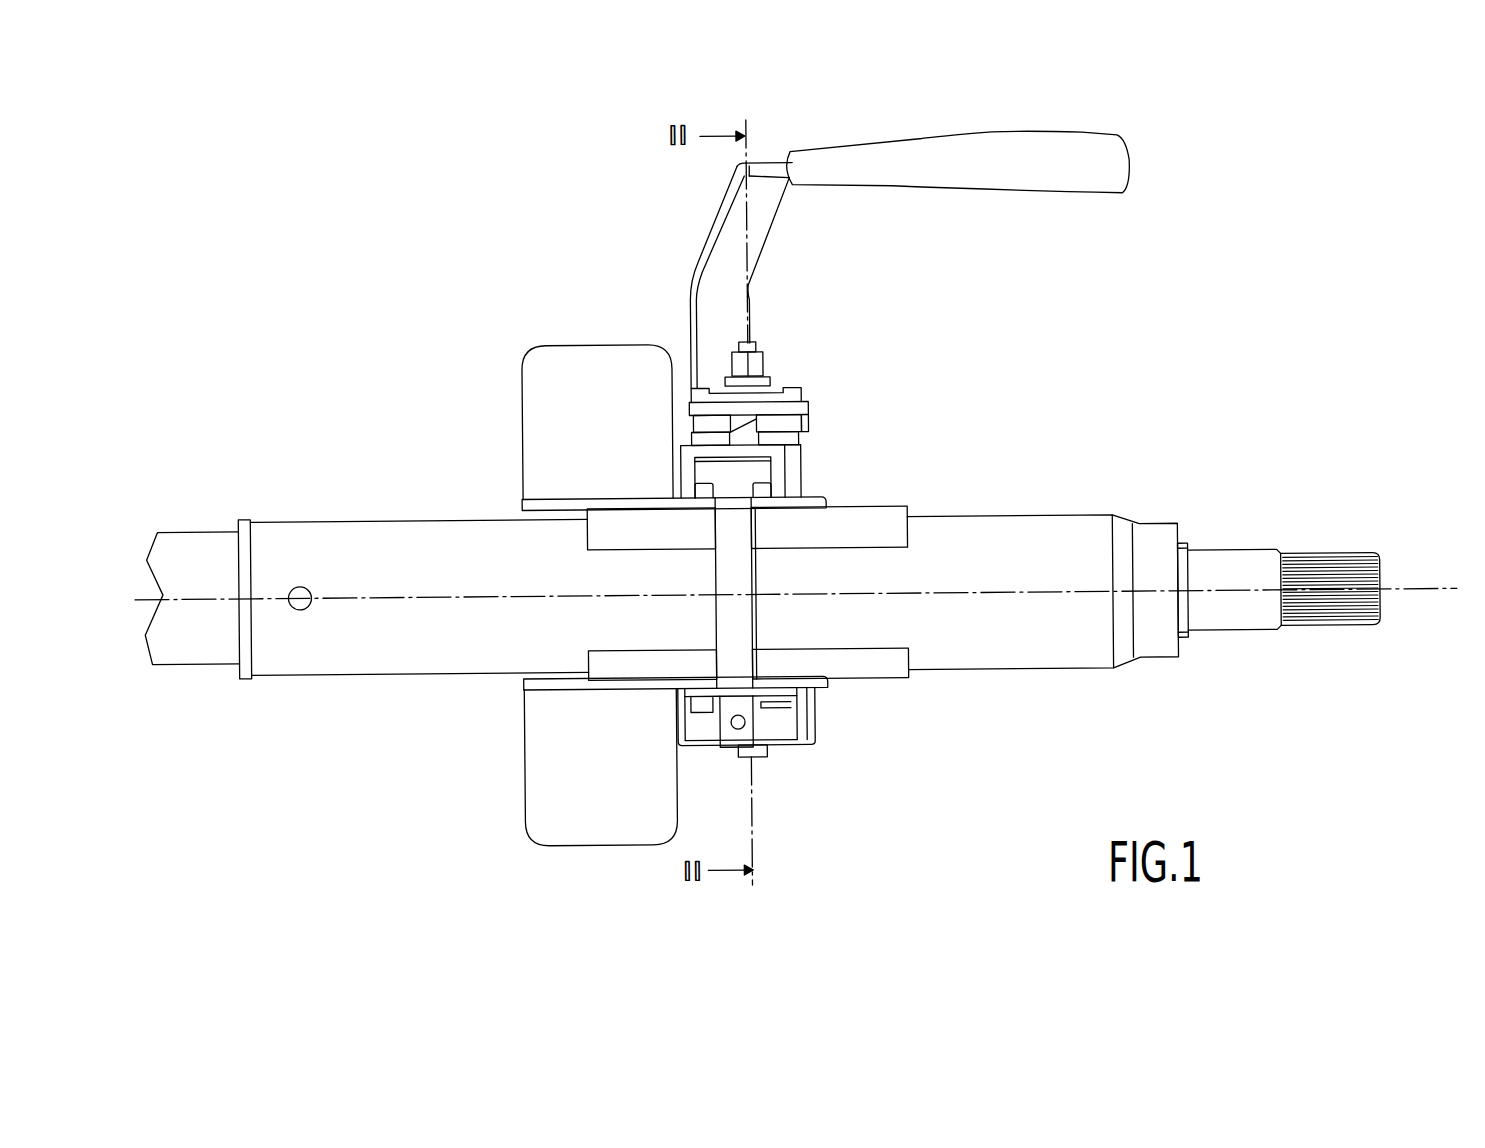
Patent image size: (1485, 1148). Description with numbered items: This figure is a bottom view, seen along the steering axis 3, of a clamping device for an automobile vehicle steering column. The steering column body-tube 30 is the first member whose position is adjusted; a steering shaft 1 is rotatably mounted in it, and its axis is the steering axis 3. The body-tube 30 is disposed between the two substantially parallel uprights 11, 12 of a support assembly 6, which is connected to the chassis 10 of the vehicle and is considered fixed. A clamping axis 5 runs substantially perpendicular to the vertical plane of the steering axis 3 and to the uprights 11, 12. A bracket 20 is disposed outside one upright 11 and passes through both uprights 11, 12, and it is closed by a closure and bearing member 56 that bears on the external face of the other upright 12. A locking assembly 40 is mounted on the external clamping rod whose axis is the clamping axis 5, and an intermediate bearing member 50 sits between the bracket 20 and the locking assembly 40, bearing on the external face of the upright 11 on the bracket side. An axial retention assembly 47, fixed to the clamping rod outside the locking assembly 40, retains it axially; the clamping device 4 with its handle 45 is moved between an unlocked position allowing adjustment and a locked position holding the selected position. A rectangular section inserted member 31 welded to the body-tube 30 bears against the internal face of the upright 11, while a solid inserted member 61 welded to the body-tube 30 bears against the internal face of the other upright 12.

The steering shaft 1 is at (1233, 574).
The steering axis 3 is at (1418, 594).
The clamping device 4 is at (778, 330).
The clamping axis 5 is at (739, 288).
The support assembly 6 is at (540, 452).
The chassis 10 is at (590, 365).
The upright 11 is at (817, 502).
The upright 12 is at (821, 690).
The bracket 20 is at (733, 630).
The body-tube 30 is at (1050, 543).
The rectangular section inserted member 31 is at (880, 532).
The locking assembly 40 is at (813, 410).
The handle 45 is at (958, 168).
The axial retention assembly 47 is at (768, 364).
The intermediate bearing member 50 is at (780, 463).
The closure and bearing member 56 is at (782, 723).
The solid inserted member 61 is at (880, 662).